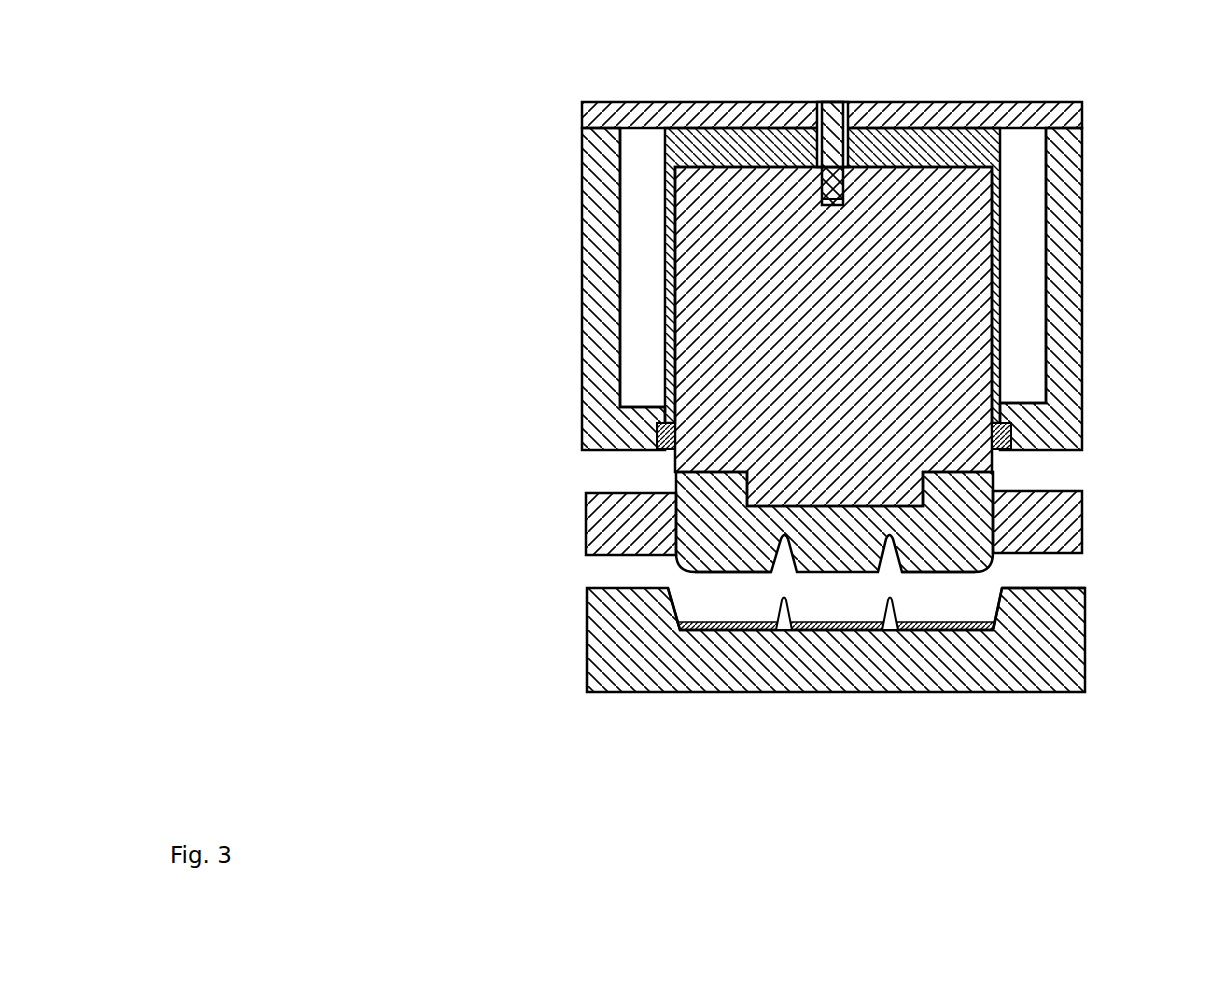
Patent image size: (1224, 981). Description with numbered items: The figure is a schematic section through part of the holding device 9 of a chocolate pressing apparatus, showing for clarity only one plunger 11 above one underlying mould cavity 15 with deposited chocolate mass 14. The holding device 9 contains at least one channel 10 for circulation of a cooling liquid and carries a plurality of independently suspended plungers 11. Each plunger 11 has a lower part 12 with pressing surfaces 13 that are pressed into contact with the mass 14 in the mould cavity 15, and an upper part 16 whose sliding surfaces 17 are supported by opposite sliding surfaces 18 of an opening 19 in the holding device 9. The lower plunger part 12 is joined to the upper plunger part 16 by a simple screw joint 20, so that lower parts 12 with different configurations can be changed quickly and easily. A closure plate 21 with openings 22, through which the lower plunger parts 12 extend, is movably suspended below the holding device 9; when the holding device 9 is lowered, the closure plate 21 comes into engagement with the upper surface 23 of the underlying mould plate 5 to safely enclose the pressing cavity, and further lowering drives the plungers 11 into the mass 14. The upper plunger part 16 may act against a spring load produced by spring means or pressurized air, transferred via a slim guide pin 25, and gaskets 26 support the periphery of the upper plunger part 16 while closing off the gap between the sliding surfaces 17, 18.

The mould plate 5 is at (1063, 650).
The holding device 9 is at (1062, 208).
The channel 10 is at (645, 282).
The plunger 11 is at (540, 374).
The lower plunger part 12 is at (690, 525).
The pressing surface 13 is at (690, 565).
The mass 14 is at (690, 626).
The mould cavity 15 is at (683, 607).
The upper plunger part 16 is at (745, 300).
The sliding surface 17 is at (1000, 253).
The opposite sliding surface 18 is at (1000, 323).
The opening 19 is at (1000, 395).
The screw joint 20 is at (920, 478).
The closure plate 21 is at (1050, 522).
The opening 22 is at (1005, 552).
The upper surface 23 is at (1101, 606).
The guide pin 25 is at (862, 100).
The gasket 26 is at (1003, 426).